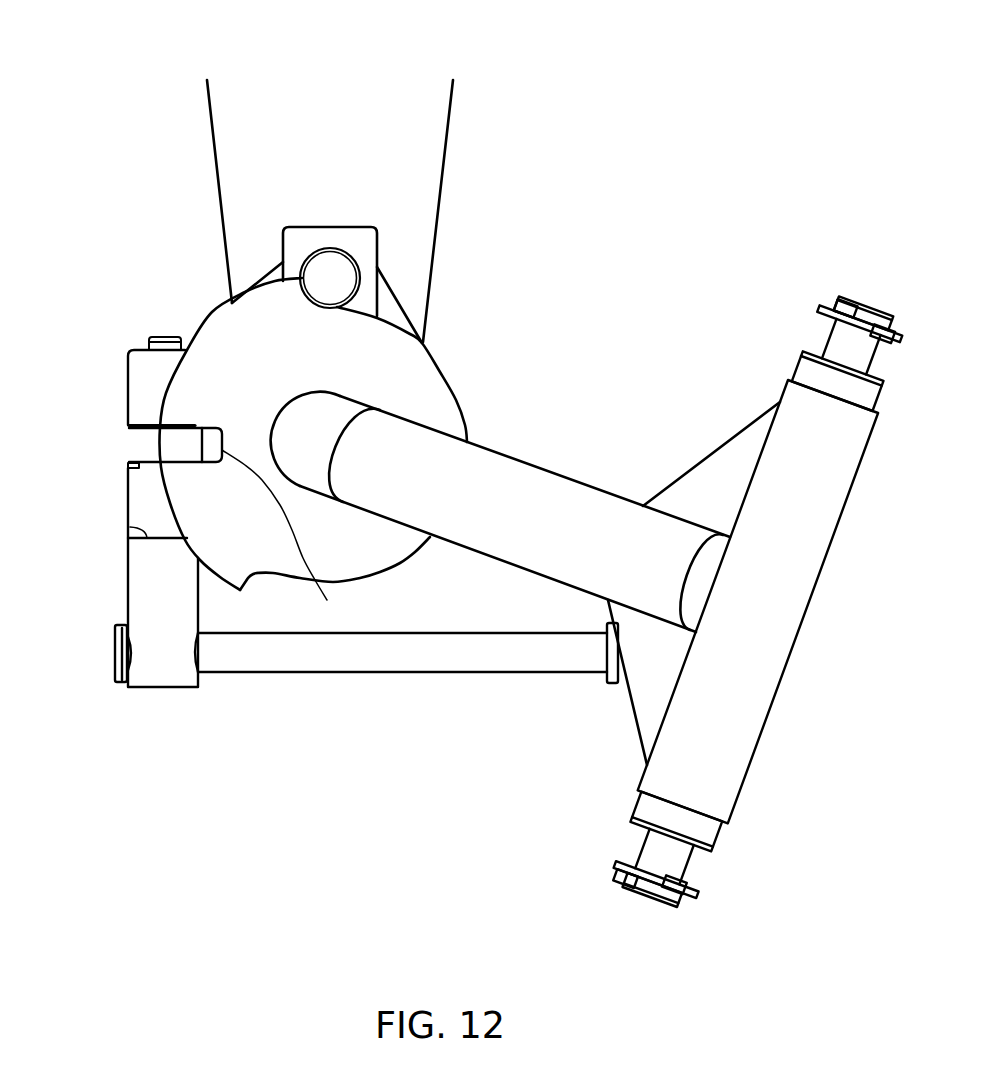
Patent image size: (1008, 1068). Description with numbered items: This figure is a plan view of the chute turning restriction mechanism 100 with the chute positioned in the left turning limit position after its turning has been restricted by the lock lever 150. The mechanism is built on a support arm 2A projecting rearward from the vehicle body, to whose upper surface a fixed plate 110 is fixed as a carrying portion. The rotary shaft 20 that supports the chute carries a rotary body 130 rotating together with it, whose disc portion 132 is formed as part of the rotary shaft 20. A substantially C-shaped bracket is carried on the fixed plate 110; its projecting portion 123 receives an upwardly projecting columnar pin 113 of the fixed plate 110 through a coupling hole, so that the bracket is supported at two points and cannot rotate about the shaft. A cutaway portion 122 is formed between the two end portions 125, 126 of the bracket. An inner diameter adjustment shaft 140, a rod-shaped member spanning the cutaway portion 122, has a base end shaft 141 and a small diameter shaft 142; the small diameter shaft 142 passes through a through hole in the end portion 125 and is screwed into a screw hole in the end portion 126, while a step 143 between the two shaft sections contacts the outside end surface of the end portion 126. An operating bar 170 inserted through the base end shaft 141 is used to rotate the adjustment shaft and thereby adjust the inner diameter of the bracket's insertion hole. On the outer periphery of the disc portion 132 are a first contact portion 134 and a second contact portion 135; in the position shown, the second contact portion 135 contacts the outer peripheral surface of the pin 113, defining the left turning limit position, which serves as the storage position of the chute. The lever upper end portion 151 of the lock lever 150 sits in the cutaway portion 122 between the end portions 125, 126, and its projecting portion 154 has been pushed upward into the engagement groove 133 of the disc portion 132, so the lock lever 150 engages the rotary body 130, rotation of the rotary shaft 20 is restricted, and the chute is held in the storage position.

The support arm 2A is at (388, 117).
The rotary shaft 20 is at (537, 487).
The chute turning restriction mechanism 100 is at (468, 322).
The fixed plate 110 is at (392, 306).
The pin 113 is at (335, 268).
The cutaway portion 122 is at (130, 465).
The projecting portion 123 is at (295, 238).
The end portion 125 is at (143, 508).
The end portion 126 is at (147, 362).
The rotary body 130 is at (464, 418).
The disc portion 132 is at (440, 392).
The engagement groove 133 is at (293, 535).
The first contact portion 134 is at (258, 586).
The second contact portion 135 is at (318, 294).
The inner diameter adjustment shaft 140 is at (130, 708).
The base end shaft 141 is at (175, 675).
The small diameter shaft 142 is at (162, 336).
The step 143 is at (130, 530).
The lock lever 150 is at (105, 429).
The lever upper end portion 151 is at (138, 445).
The projecting portion 154 is at (190, 438).
The operating bar 170 is at (470, 655).